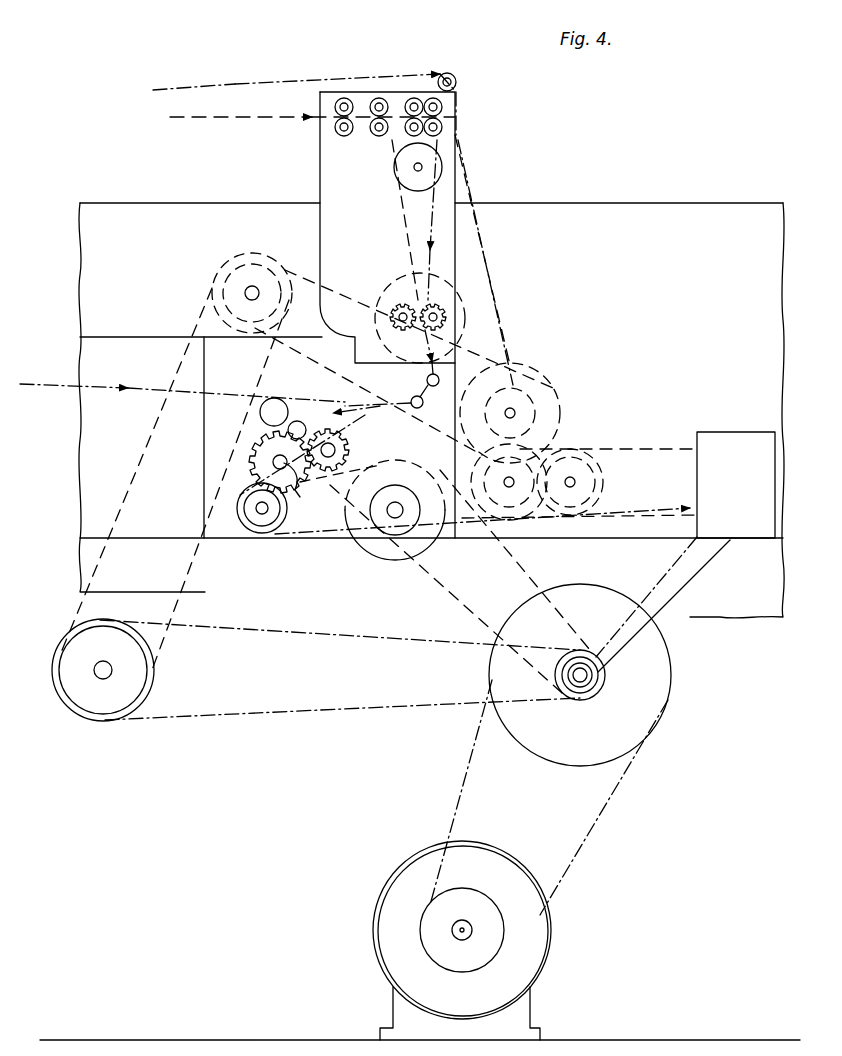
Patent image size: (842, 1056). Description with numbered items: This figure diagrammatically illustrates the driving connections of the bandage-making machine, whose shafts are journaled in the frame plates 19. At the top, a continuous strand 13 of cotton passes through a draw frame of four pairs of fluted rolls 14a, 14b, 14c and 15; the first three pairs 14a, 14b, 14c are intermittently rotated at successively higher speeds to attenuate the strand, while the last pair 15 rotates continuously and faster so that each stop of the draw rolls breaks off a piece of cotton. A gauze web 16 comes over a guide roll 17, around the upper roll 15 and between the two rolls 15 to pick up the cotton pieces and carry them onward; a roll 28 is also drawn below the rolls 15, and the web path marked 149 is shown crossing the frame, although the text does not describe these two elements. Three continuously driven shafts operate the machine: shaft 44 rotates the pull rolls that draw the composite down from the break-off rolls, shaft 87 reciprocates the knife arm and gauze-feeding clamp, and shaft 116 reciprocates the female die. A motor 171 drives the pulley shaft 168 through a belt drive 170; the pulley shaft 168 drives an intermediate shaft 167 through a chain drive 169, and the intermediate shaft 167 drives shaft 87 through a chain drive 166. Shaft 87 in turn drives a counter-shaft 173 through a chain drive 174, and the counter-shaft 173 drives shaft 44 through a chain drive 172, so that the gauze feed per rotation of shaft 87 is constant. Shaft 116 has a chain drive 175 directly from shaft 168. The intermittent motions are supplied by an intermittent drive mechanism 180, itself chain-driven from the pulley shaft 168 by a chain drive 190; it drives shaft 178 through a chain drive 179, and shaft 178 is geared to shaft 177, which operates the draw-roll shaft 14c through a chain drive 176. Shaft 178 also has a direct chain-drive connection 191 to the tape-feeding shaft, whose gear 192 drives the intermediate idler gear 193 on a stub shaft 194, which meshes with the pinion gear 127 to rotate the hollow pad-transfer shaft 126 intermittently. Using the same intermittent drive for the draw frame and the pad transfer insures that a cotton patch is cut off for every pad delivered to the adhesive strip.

The continuous strand of cotton 13 is at (238, 117).
The pair of fluted draw rolls 14a is at (344, 98).
The pair of fluted draw rolls 14b is at (379, 98).
The pair of fluted draw rolls 14c is at (414, 98).
The pair of break-off rolls 15 is at (442, 104).
The gauze web 16 is at (240, 85).
The guide roll 17 is at (453, 75).
The machine frame plate 19 is at (582, 203).
The drum 28 is at (396, 178).
The shaft 44 is at (440, 317).
The shaft 87 is at (254, 287).
The shaft 116 is at (390, 518).
The hollow shaft 126 is at (334, 447).
The pinion gear 127 is at (340, 392).
The web 149 is at (50, 384).
The chain drive 166 is at (145, 450).
The intermediate shaft 167 is at (100, 679).
The pulley shaft 168 is at (585, 676).
The chain drive 169 is at (300, 716).
The belt drive 170 is at (590, 824).
The motor 171 is at (532, 942).
The chain drive 172 is at (518, 347).
The counter-shaft 173 is at (520, 408).
The chain drive 174 is at (342, 288).
The chain drive 175 is at (420, 598).
The chain drive 176 is at (483, 248).
The shaft 177 is at (515, 470).
The shaft 178 is at (575, 472).
The chain drive 179 is at (668, 442).
The intermittent drive mechanism 180 is at (750, 432).
The chain drive 190 is at (662, 548).
The chain-drive connection 191 is at (430, 416).
The gear 192 is at (255, 533).
The intermediate idler gear 193 is at (250, 460).
The stub shaft 194 is at (307, 483).